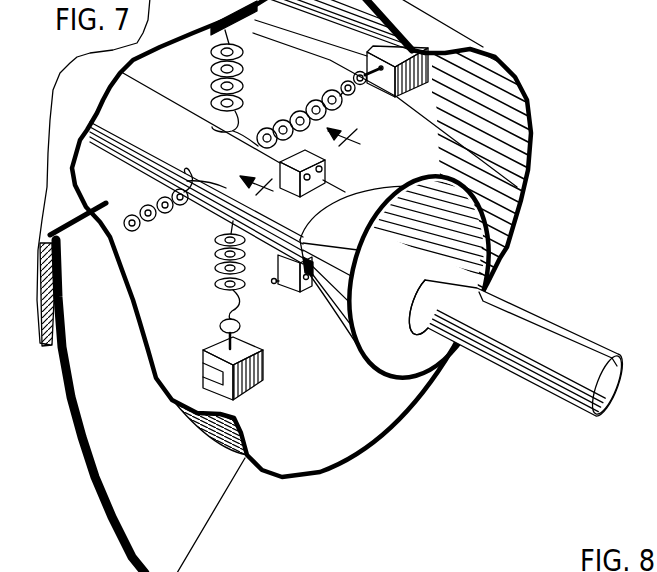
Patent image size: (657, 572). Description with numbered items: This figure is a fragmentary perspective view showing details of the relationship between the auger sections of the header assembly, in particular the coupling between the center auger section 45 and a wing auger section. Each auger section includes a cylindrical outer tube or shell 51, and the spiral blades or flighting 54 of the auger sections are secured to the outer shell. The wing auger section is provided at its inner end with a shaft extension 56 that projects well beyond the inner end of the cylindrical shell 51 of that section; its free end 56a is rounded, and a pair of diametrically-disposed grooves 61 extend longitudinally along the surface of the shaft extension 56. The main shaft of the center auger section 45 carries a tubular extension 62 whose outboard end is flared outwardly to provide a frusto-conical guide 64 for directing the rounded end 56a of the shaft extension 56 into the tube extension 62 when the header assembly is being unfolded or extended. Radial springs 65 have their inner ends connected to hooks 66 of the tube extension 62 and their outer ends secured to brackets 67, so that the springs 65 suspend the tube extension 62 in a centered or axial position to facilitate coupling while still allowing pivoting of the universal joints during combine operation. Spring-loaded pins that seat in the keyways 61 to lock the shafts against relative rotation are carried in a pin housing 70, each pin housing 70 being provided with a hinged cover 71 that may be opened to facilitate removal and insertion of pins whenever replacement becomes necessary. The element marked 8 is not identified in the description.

The center auger section 45 is at (480, 31).
The cylindrical outer tube or shell 51 is at (297, 482).
The spiral blades or flighting 54 is at (176, 533).
The tubular extension 62 is at (150, 103).
The frusto-conical guide 64 is at (402, 186).
The shaft extension 56 is at (502, 347).
The free end (rounded end or nose) of shaft extension 56a is at (422, 298).
The grooves or keyways 61 is at (532, 320).
The brackets 67 is at (416, 90).
The pin housing 70 is at (324, 174).
The hinged cover 71 is at (330, 130).
The direction indicator 8 is at (308, 181).
The radial springs 65 is at (292, 105).
The hooks 66 is at (187, 168).